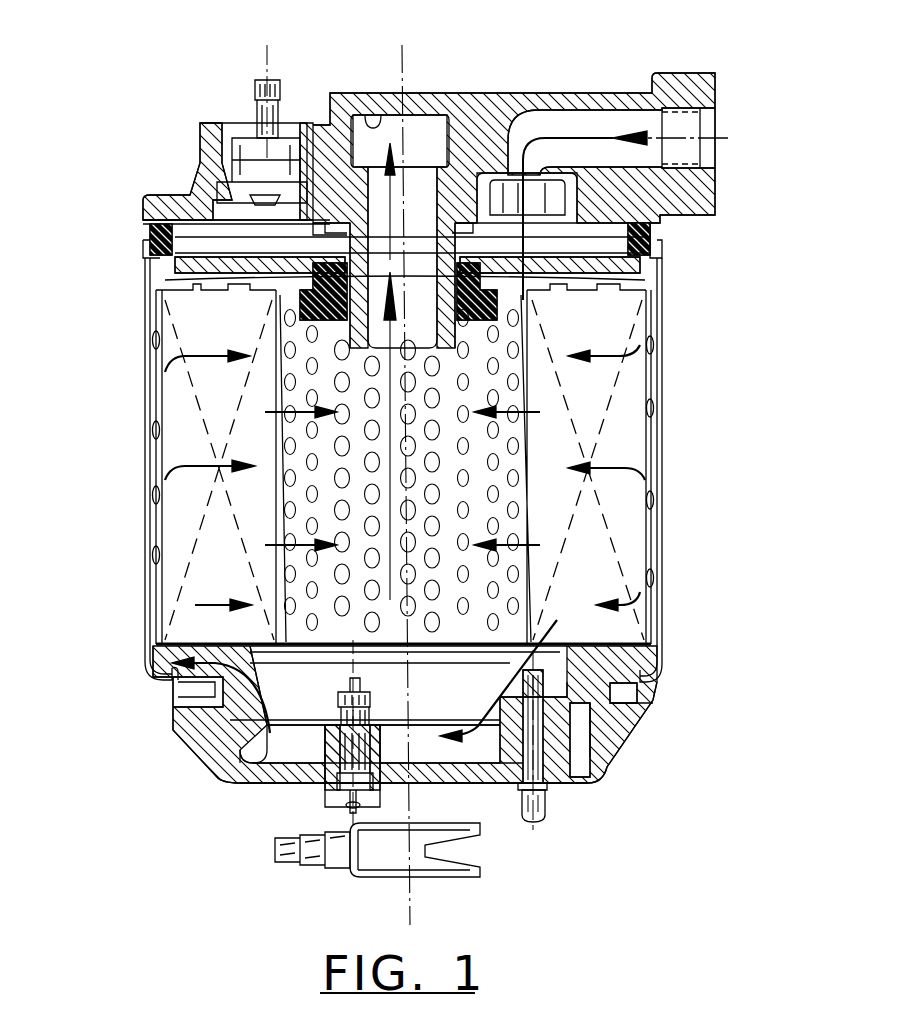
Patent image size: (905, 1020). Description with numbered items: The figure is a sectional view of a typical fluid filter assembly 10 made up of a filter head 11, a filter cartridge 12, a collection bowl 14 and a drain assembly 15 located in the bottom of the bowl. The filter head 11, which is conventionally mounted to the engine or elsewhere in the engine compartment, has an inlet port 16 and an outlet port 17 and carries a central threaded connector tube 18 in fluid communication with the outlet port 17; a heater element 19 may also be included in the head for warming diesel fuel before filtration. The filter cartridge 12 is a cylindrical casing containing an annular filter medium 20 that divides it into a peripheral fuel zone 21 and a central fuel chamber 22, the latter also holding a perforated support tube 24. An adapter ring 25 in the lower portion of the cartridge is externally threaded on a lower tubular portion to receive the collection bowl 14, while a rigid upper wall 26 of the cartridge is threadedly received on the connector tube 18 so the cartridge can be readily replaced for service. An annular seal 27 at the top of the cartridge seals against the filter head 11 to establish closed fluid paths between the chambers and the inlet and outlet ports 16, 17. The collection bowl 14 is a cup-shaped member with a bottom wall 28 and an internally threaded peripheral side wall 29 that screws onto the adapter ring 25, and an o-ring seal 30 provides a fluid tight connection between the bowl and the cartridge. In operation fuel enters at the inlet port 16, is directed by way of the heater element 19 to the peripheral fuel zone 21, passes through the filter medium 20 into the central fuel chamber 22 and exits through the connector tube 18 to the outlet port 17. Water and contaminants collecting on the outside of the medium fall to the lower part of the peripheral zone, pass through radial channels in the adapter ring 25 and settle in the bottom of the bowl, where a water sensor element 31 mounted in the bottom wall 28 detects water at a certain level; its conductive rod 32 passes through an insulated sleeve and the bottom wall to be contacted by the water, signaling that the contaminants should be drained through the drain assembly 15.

The fluid filter assembly 10 is at (118, 185).
The filter head 11 is at (445, 93).
The filter cartridge 12 is at (148, 487).
The collection bowl 14 is at (217, 787).
The drain assembly 15 is at (262, 865).
The inlet port 16 is at (720, 122).
The outlet port 17 is at (381, 113).
The central threaded connector tube 18 is at (452, 205).
The heater element 19 is at (528, 143).
The annular filter medium 20 is at (620, 440).
The peripheral fuel zone 21 is at (653, 548).
The central fuel chamber 22 is at (290, 602).
The perforated support tube 24 is at (340, 542).
The adapter ring 25 is at (170, 683).
The rigid upper wall 26 is at (300, 268).
The annular seal 27 is at (143, 232).
The bottom wall 28 is at (273, 783).
The peripheral side wall 29 is at (217, 740).
The o-ring seal 30 is at (630, 690).
The water sensor element 31 is at (556, 780).
The conductive rod 32 is at (540, 816).